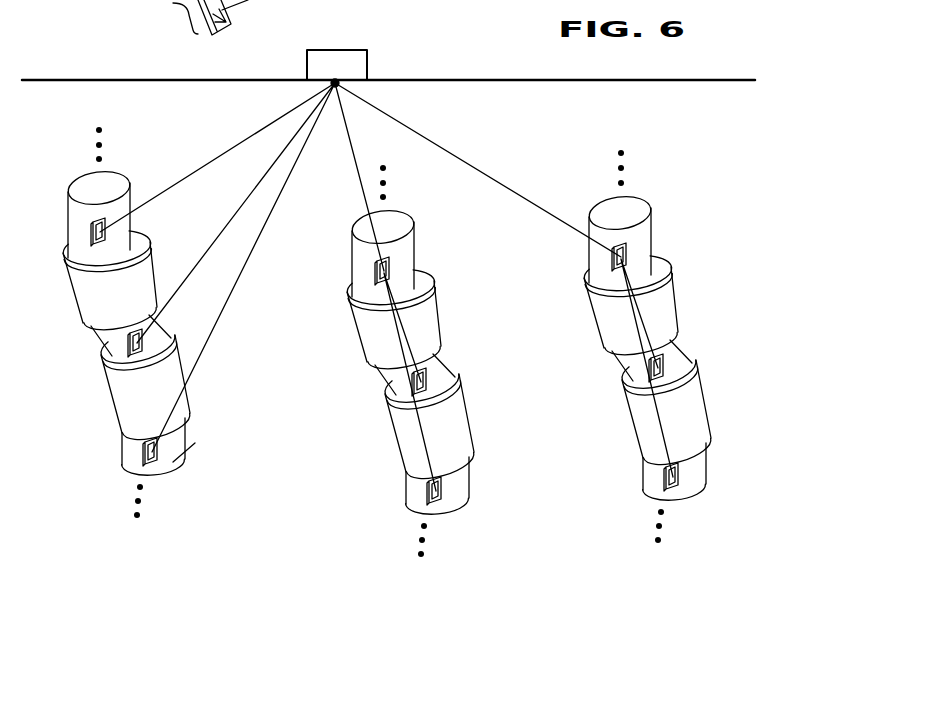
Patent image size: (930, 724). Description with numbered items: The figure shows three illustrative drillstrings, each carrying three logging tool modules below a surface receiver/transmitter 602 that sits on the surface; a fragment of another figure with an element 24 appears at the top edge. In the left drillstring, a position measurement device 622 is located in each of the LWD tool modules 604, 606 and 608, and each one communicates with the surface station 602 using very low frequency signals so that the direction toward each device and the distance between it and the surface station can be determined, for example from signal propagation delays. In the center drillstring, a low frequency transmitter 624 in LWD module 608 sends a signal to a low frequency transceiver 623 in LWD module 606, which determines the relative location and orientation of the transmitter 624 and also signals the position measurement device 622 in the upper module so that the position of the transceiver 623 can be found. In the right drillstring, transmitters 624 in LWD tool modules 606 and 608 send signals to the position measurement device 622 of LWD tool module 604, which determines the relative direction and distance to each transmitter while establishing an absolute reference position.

The surgical instrument 24 is at (173, 4).
The surface receiver/transmitter 602 is at (353, 65).
The LWD tool module 604 is at (115, 190).
The LWD tool module 606 is at (158, 335).
The LWD tool module 608 is at (453, 500).
The position measurement device 622 is at (145, 457).
The low frequency transceiver 623 is at (408, 385).
The low frequency transmitter 624 is at (427, 490).